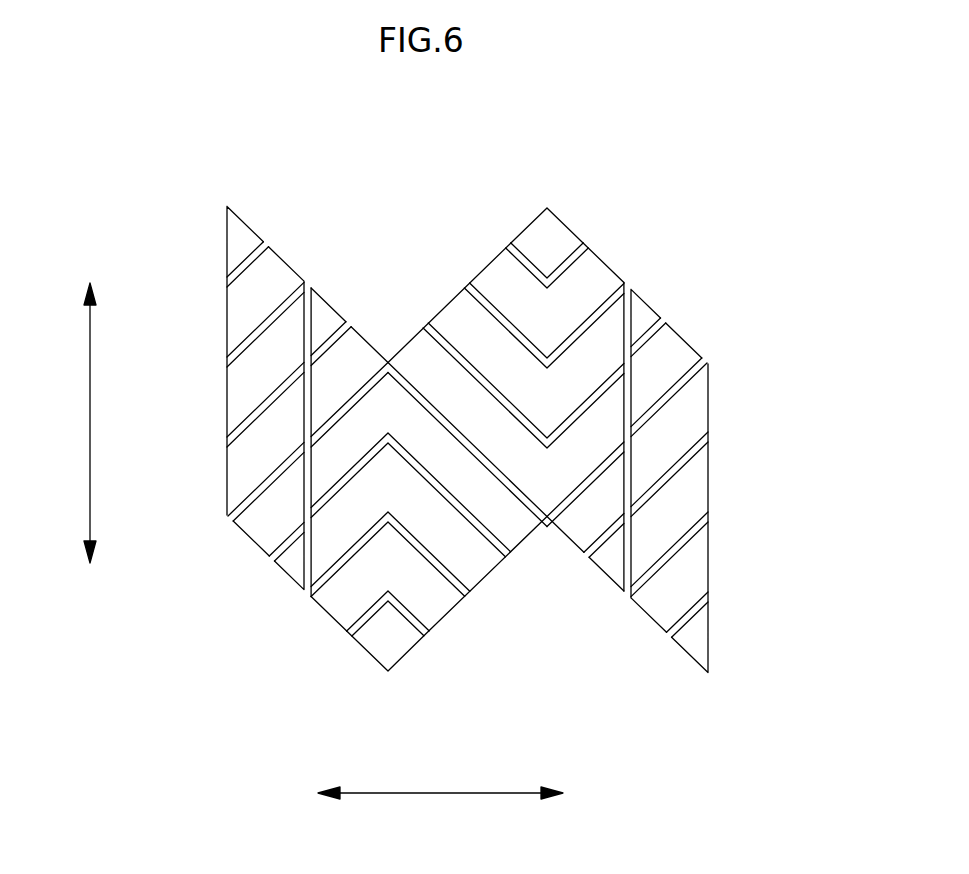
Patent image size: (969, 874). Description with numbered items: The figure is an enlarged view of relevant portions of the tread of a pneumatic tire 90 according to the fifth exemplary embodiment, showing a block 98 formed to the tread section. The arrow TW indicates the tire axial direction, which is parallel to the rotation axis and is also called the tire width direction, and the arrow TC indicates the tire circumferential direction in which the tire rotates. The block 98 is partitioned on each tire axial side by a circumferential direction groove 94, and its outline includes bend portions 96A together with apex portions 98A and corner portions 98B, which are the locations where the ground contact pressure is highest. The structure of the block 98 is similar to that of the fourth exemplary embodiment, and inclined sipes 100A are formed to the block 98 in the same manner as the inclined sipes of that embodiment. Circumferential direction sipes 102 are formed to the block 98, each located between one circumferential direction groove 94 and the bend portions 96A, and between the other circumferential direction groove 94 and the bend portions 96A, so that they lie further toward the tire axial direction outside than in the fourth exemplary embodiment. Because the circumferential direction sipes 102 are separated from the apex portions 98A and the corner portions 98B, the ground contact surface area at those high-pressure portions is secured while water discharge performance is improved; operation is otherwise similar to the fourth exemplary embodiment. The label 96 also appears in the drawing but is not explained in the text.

The tire 90 is at (636, 143).
The circumferential direction groove 94 is at (213, 422).
The center land portion 96 is at (469, 276).
The bend portion 96A is at (548, 175).
The block 98 is at (698, 334).
The apex portion 98A is at (548, 209).
The corner portion 98B is at (388, 360).
The inclined sipe 100A is at (277, 385).
The circumferential direction sipe 102 is at (327, 300).
The tire circumferential direction TC is at (88, 428).
The tire axial direction TW is at (443, 797).